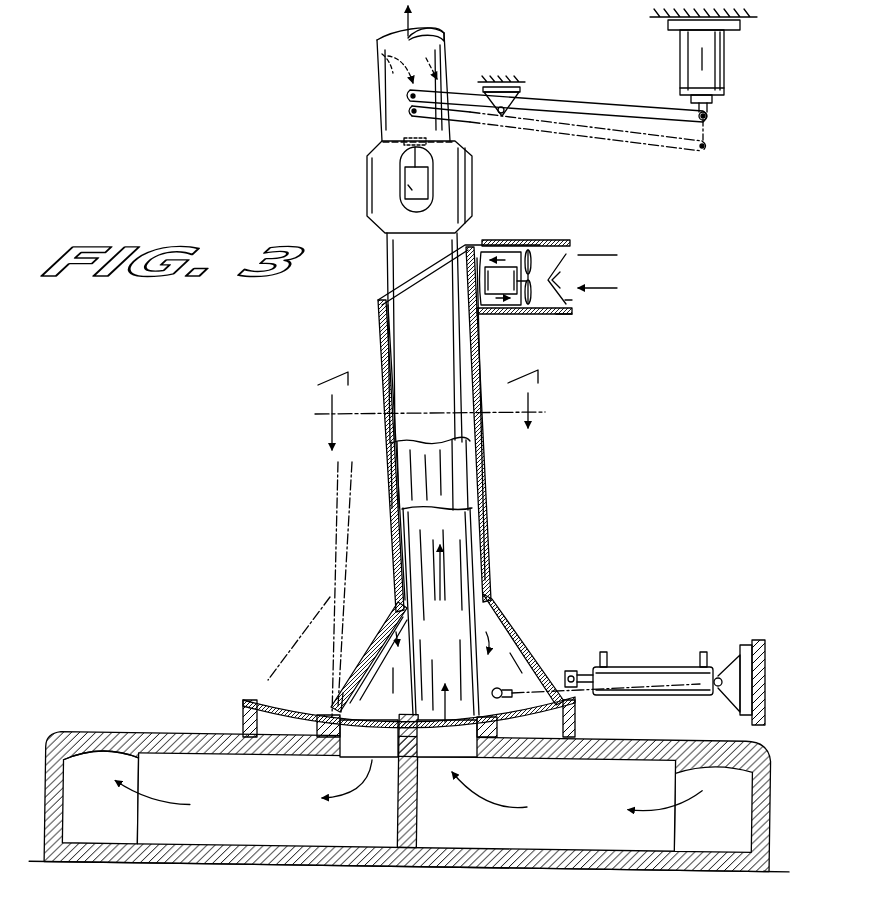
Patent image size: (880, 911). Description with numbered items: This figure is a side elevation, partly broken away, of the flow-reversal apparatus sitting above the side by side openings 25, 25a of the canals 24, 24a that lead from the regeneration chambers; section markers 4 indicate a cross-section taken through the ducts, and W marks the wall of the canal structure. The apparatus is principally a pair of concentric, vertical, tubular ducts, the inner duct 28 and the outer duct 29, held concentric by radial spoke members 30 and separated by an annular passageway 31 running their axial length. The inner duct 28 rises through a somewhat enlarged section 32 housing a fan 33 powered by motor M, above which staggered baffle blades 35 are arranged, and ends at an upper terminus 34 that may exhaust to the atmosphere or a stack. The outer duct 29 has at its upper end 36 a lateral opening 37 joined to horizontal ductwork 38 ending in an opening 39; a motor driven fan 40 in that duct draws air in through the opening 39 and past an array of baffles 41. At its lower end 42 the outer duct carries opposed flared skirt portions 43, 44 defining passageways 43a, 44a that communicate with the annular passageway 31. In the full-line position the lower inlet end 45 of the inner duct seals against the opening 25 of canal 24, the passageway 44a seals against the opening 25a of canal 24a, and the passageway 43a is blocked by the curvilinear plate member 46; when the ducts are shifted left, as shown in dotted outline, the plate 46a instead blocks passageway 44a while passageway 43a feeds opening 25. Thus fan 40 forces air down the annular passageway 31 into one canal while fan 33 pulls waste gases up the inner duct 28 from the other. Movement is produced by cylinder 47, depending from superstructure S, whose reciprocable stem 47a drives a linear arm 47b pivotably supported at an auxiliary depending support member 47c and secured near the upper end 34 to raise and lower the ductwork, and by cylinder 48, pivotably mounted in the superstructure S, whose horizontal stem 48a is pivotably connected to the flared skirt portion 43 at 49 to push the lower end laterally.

The canal 24 is at (707, 840).
The canal 24a is at (100, 825).
The opening 25 is at (436, 742).
The opening 25a is at (382, 745).
The inner duct 28 is at (405, 250).
The outer duct 29 is at (490, 510).
The radial spoke members 30 is at (490, 594).
The annular passageway 31 is at (487, 565).
The enlarged section 32 is at (367, 166).
The fan 33 is at (375, 141).
The upper terminus 34 is at (440, 35).
The staggered baffle blades 35 is at (386, 56).
The upper end 36 is at (535, 235).
The lateral opening 37 is at (495, 252).
The horizontal ductwork 38 is at (553, 308).
The opening 39 is at (570, 297).
The motor driven fan 40 is at (522, 315).
The baffles 41 is at (548, 280).
The lower end 42 is at (523, 610).
The flared skirt portion 43 is at (517, 648).
The passageway 43a is at (528, 650).
The flared skirt portion 44 is at (378, 633).
The passageway 44a is at (380, 675).
The lower inlet end 45 is at (458, 722).
The curvilinear plate member 46 is at (580, 716).
The plate 46a is at (258, 668).
The cylinder 47 is at (712, 61).
The reciprocable stem 47a is at (712, 104).
The linear arm 47b is at (625, 115).
The auxiliary depending support member 47c is at (522, 94).
The cylinder 48 is at (650, 665).
The stem 48a is at (600, 662).
The pivotal connection 49 is at (569, 671).
The section line 4 is at (430, 408).
The motor M is at (412, 183).
The superstructure S is at (754, 642).
The wall W is at (418, 826).